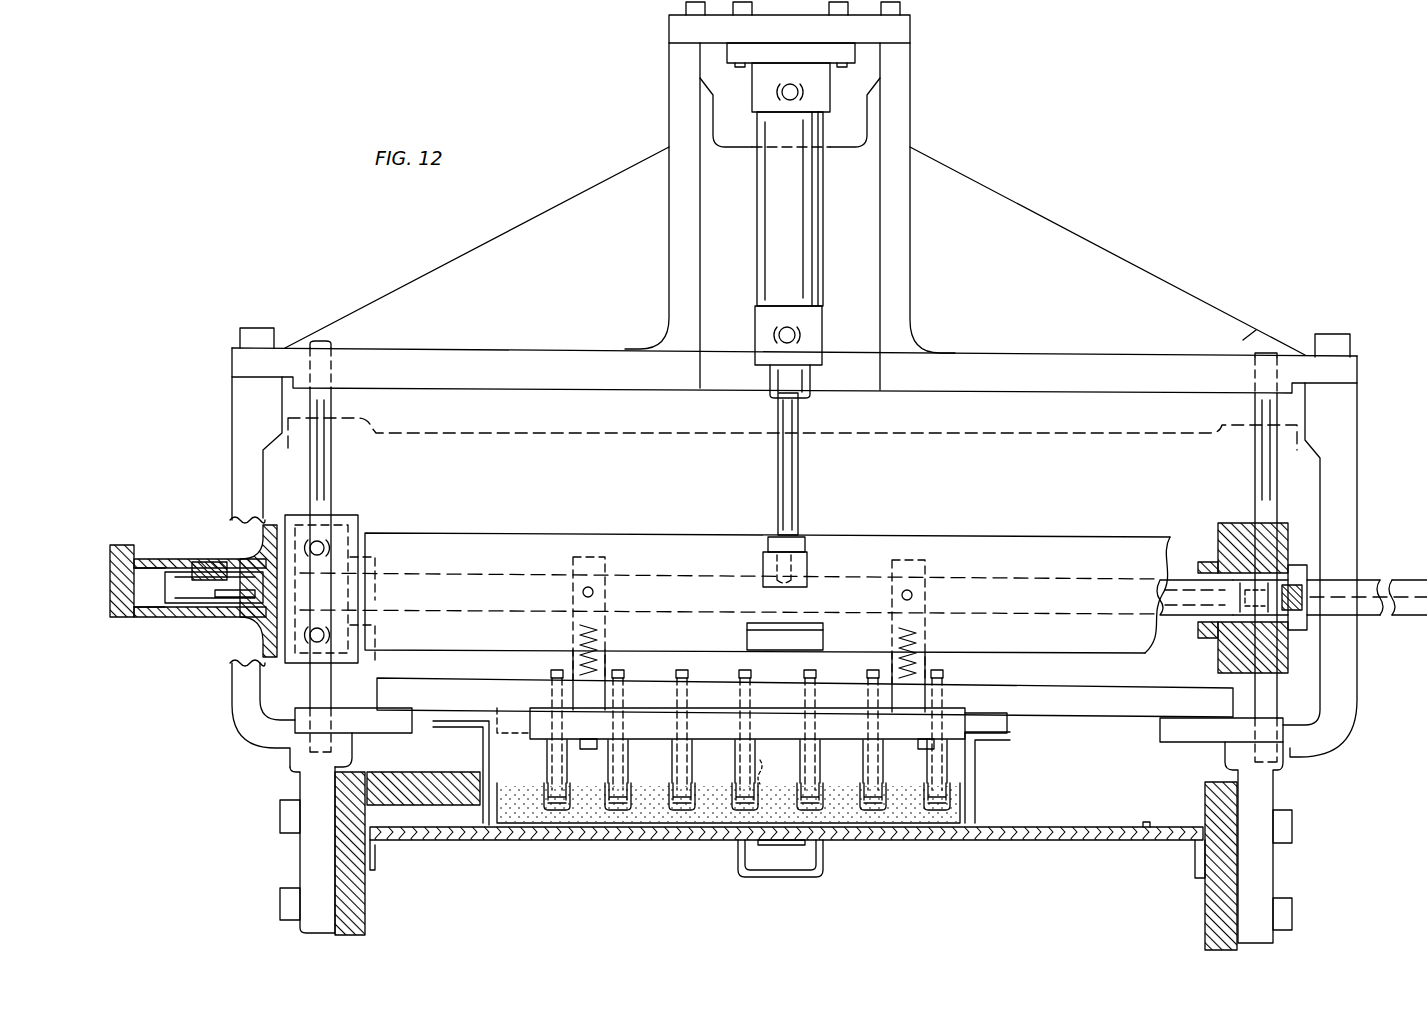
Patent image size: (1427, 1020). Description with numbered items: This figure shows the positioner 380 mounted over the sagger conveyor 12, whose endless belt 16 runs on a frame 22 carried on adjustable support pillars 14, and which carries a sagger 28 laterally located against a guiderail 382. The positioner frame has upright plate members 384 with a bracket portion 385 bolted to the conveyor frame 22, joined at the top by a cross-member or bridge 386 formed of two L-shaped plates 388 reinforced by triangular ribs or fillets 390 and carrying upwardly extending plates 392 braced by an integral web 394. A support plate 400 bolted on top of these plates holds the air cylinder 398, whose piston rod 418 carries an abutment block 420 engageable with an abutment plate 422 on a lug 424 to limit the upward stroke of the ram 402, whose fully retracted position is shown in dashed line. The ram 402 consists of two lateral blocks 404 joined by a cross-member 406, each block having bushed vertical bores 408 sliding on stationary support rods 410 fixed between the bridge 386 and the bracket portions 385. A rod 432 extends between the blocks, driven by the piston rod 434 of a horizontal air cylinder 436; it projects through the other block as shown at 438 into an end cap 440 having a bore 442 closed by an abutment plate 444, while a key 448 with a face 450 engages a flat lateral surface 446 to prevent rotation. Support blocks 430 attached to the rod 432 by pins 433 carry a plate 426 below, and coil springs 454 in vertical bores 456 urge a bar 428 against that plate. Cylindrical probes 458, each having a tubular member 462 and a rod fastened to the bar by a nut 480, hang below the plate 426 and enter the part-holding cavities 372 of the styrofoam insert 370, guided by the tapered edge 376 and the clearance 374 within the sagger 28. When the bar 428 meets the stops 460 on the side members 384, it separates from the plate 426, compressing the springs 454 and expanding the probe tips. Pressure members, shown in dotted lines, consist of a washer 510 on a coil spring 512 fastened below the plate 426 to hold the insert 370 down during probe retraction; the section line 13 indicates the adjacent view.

The support plate 400 is at (900, 32).
The upwardly extending plates 392 is at (680, 100).
The web 394 is at (850, 155).
The air cylinder 398 is at (822, 276).
The L-shaped plates 388 is at (622, 358).
The ribs or fillets 390 is at (1200, 282).
The cross-member or bridge 386 is at (1252, 333).
The upright plate members 384 is at (232, 432).
The positioner 380 is at (237, 738).
The ram 402 is at (1120, 432).
The support rods 410 is at (325, 488).
The lateral blocks 404 is at (275, 528).
The abutment plate 444 is at (122, 545).
The key 448 is at (197, 560).
The face 450 is at (190, 570).
The flat lateral surface 446 is at (258, 590).
The end cap 440 is at (268, 540).
The bore 442 is at (152, 610).
The rod projection 438 is at (252, 617).
The piston rod 418 is at (798, 488).
The abutment block 420 is at (807, 556).
The cross-member 406 is at (1025, 548).
The rod 432 is at (1175, 580).
The vertical bores 408 is at (1290, 552).
The piston rod 434 is at (1292, 598).
The air cylinder 436 is at (1405, 618).
The pins 433 is at (612, 585).
The abutment plate 422 is at (810, 622).
The lug 424 is at (815, 640).
The coil springs 454 is at (578, 640).
The vertical bore 456 is at (600, 640).
The bar 428 is at (1155, 690).
The support blocks 430 is at (598, 700).
The nut 480 is at (545, 678).
The probes 458 is at (680, 775).
The styrofoam insert 370 is at (960, 830).
The part-holding cavities 372 is at (828, 800).
The tapered edge 376 is at (706, 790).
The washer 510 is at (765, 786).
The coil spring 512 is at (775, 726).
The tubular member 462 is at (548, 770).
The support pillars 14 is at (540, 790).
The clearance 374 is at (497, 745).
The sagger 28 is at (978, 775).
The plate 426 is at (895, 735).
The endless belt 16 is at (1042, 840).
The line 13— 13 is at (848, 848).
The sagger conveyor 12 is at (430, 855).
The guiderail 382 is at (415, 782).
The frame 22 is at (362, 918).
The bracket portion 385 is at (300, 786).
The stops 460 is at (372, 728).